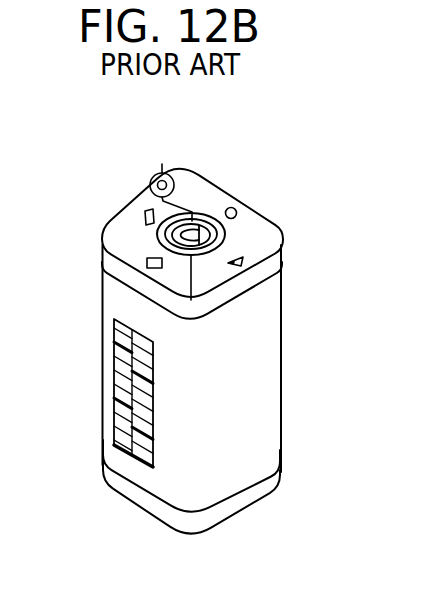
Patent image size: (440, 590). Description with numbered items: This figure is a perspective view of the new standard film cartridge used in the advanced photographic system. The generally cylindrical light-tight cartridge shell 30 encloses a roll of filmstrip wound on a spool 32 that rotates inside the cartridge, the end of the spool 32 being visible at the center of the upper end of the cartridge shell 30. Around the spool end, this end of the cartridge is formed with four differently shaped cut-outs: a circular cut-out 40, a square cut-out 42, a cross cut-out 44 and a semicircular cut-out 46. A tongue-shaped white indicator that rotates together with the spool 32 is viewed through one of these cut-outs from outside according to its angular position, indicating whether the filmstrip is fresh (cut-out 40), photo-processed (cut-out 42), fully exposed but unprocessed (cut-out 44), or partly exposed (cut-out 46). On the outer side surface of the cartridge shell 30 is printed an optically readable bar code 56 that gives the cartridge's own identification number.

The cartridge shell 30 is at (255, 403).
The spool 32 is at (214, 238).
The circular cut-out 40 is at (236, 211).
The square cut-out 42 is at (145, 213).
The cross cut-out 44 is at (147, 263).
The semicircular cut-out 46 is at (238, 264).
The bar code 56 is at (114, 408).